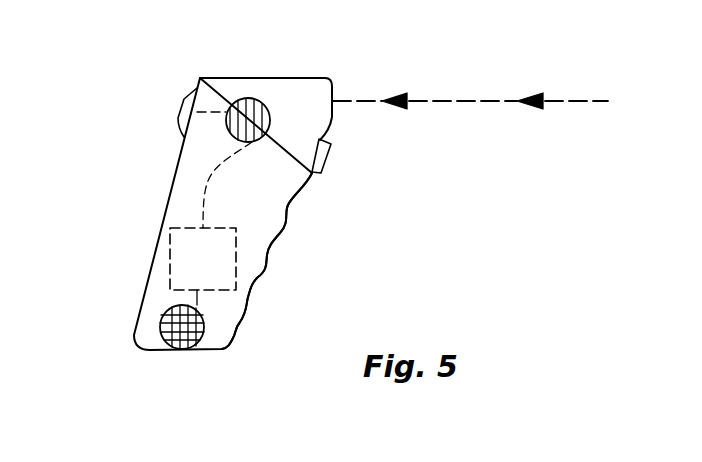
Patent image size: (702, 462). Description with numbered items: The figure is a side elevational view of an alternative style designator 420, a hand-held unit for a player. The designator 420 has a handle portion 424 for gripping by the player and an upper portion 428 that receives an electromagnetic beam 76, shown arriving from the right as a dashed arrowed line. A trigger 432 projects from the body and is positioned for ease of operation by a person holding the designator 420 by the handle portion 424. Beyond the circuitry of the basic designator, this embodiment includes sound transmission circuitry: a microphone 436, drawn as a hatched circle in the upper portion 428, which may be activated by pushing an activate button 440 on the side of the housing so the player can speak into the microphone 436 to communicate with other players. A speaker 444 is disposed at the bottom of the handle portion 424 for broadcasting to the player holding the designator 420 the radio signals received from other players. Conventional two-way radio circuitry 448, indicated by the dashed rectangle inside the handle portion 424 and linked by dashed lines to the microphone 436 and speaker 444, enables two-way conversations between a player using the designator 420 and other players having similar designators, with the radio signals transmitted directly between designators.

The designator 420 is at (127, 206).
The handle portion 424 is at (258, 278).
The upper portion 428 is at (262, 78).
The trigger 432 is at (327, 158).
The microphone 436 is at (232, 138).
The activate button 440 is at (181, 110).
The speaker 444 is at (197, 337).
The two-way radio circuitry 448 is at (170, 263).
The electromagnetic beam 76 is at (468, 101).